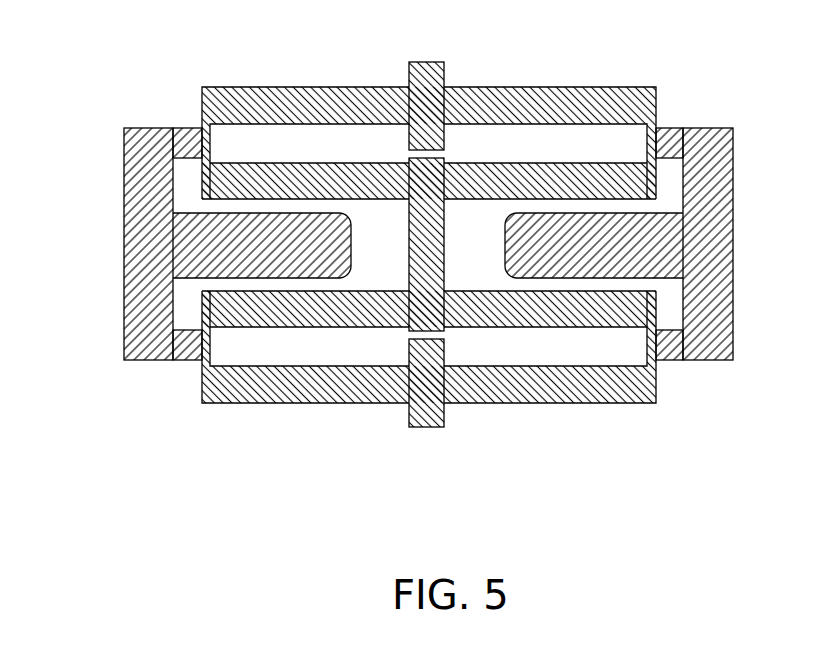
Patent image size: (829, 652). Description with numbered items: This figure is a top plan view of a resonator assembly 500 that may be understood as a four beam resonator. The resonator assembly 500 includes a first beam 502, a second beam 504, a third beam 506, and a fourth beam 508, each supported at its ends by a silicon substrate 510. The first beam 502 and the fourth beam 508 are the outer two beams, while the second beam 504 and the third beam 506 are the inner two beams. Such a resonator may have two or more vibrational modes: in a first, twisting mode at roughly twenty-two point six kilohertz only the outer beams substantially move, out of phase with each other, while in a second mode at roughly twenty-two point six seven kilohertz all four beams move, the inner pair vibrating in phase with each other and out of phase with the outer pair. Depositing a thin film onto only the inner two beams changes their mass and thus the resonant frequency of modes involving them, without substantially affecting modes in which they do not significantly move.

The resonator assembly 500 is at (424, 263).
The first beam 502 is at (545, 87).
The second beam 504 is at (507, 163).
The third beam 506 is at (505, 327).
The fourth beam 508 is at (543, 401).
The silicon substrate 510 is at (124, 256).